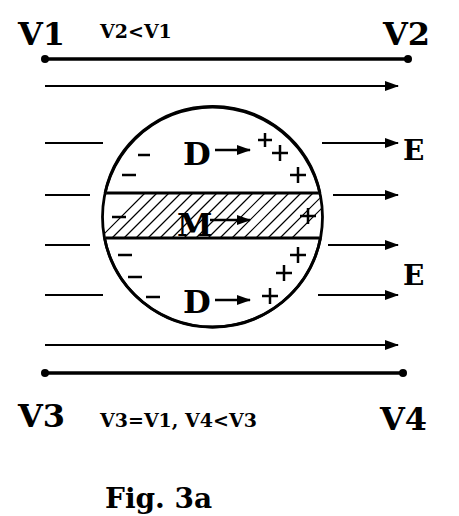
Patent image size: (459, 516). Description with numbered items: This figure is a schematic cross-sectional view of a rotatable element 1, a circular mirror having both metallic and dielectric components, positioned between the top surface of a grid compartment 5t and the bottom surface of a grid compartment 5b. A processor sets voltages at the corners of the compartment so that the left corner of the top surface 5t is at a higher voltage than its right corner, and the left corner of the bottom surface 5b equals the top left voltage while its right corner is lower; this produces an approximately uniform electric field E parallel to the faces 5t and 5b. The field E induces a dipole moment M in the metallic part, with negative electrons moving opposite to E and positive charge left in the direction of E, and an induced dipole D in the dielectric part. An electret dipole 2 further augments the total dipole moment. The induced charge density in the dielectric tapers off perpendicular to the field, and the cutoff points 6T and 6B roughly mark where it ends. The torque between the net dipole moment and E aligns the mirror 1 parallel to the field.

The rotatable element 1 is at (228, 282).
The electret dipole 2 is at (168, 200).
The top surface of a grid compartment 5t is at (260, 59).
The bottom surface of a grid compartment 5b is at (262, 373).
The cutoff point for the induced charge density 6T is at (256, 128).
The cutoff point for the induced charge density 6B is at (260, 303).